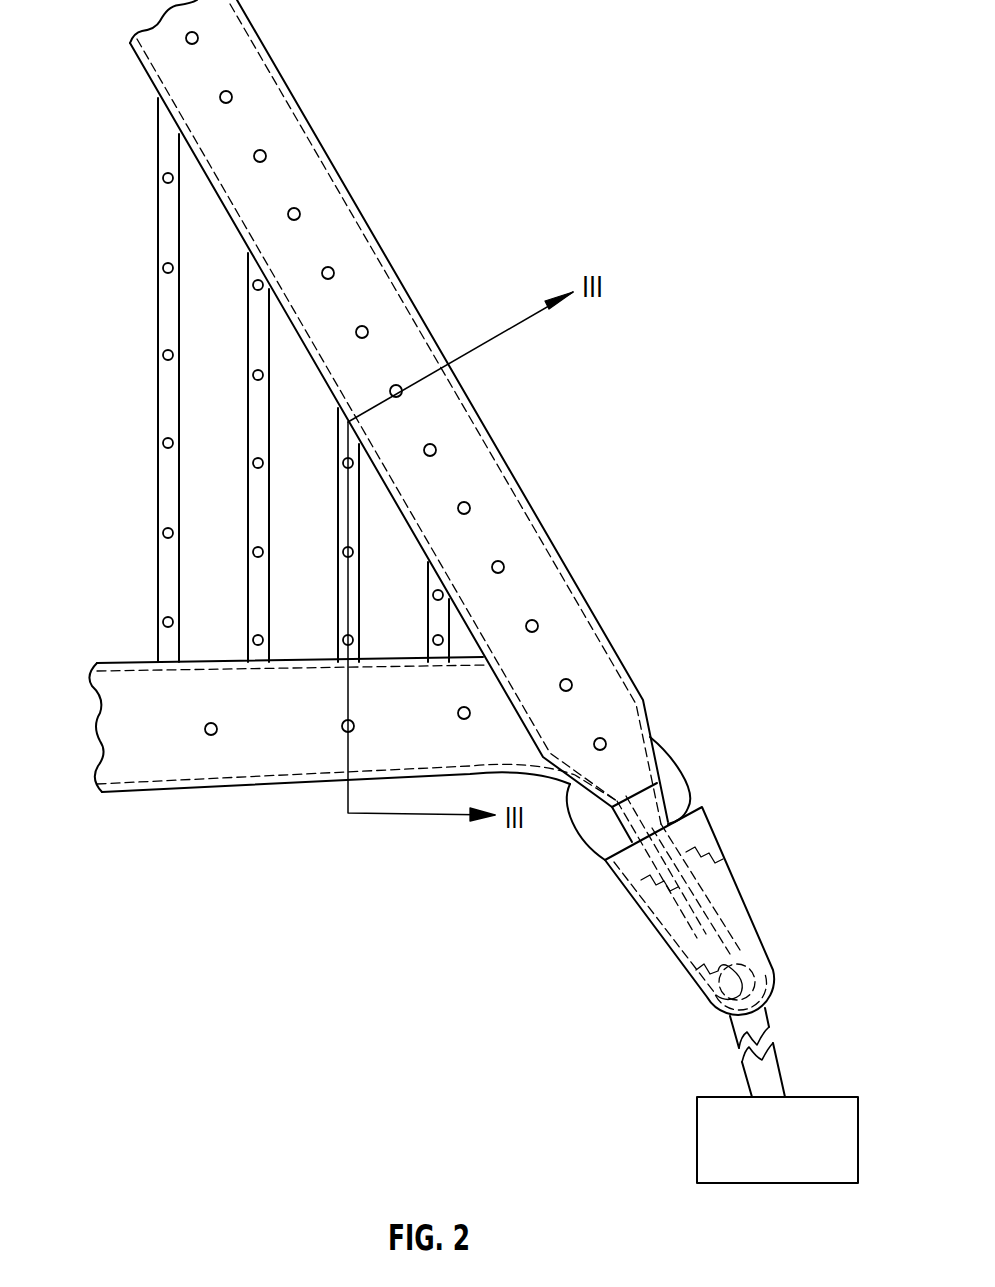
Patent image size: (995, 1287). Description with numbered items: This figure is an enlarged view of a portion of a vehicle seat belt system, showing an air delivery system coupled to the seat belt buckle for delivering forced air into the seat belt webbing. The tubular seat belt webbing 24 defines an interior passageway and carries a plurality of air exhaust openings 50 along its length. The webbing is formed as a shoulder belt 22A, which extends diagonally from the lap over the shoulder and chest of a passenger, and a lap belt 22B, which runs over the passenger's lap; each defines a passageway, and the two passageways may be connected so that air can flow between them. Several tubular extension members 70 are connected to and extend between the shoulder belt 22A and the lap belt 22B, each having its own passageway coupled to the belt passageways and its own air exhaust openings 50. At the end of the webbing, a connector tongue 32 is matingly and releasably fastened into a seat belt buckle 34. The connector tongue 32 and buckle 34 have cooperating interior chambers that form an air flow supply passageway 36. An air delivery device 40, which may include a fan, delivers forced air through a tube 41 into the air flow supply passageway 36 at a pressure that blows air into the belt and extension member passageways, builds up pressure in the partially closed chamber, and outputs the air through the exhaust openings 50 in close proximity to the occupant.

The shoulder belt 22A is at (168, 62).
The lap belt 22B is at (158, 767).
The tubular seat belt webbing 24 is at (462, 450).
The connector tongue 32 is at (670, 788).
The seat belt buckle 34 is at (723, 880).
The air flow supply passageway 36 is at (703, 932).
The air delivery device 40 is at (697, 1123).
The tube 41 is at (767, 1020).
The air exhaust openings 50 is at (333, 273).
The tubular extension members 70 is at (248, 330).